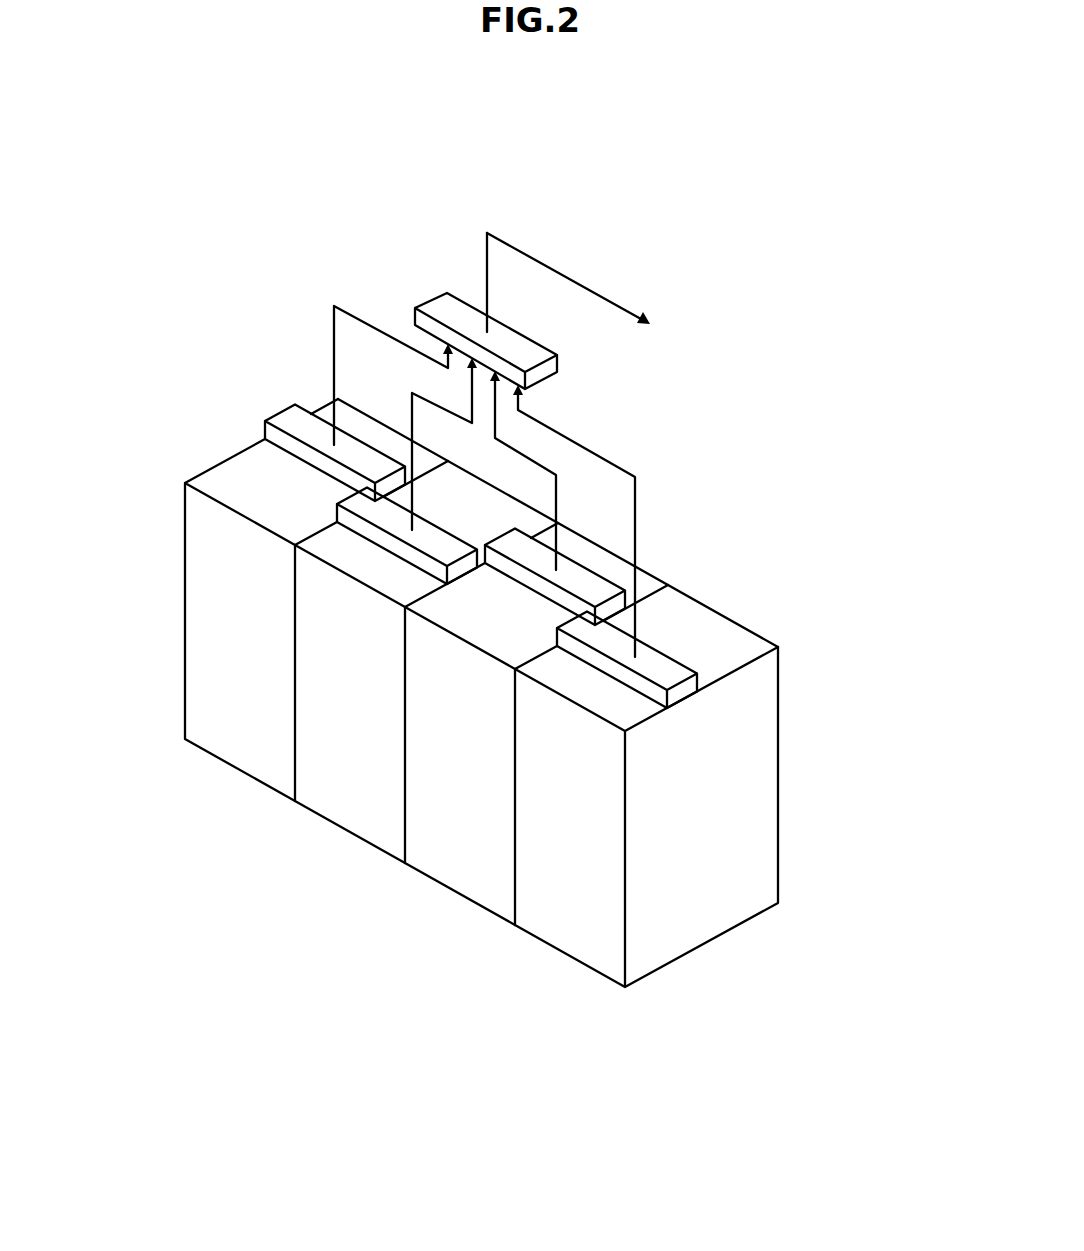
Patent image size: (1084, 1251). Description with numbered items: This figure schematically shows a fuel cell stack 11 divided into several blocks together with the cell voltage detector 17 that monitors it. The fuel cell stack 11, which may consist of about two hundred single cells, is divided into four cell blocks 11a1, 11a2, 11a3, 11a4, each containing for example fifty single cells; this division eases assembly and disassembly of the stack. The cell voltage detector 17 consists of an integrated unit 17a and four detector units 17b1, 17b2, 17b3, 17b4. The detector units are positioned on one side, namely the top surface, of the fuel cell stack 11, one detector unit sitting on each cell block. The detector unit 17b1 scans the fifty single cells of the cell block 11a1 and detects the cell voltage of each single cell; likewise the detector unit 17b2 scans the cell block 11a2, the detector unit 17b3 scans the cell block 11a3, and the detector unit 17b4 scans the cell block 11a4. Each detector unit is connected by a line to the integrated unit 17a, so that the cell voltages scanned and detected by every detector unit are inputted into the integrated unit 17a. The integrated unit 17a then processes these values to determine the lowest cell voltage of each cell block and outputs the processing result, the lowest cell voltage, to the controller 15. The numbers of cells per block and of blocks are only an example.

The fuel cell stack 11 is at (537, 1073).
The cell block 11a1 is at (255, 757).
The cell block 11a2 is at (345, 812).
The cell block 11a3 is at (458, 868).
The cell block 11a4 is at (572, 937).
The cell voltage detector 17 is at (677, 453).
The integrated unit 17a is at (445, 307).
The detector unit 17b1 is at (295, 423).
The detector unit 17b2 is at (365, 507).
The detector unit 17b3 is at (593, 587).
The detector unit 17b4 is at (658, 667).
The controller 15 is at (693, 291).